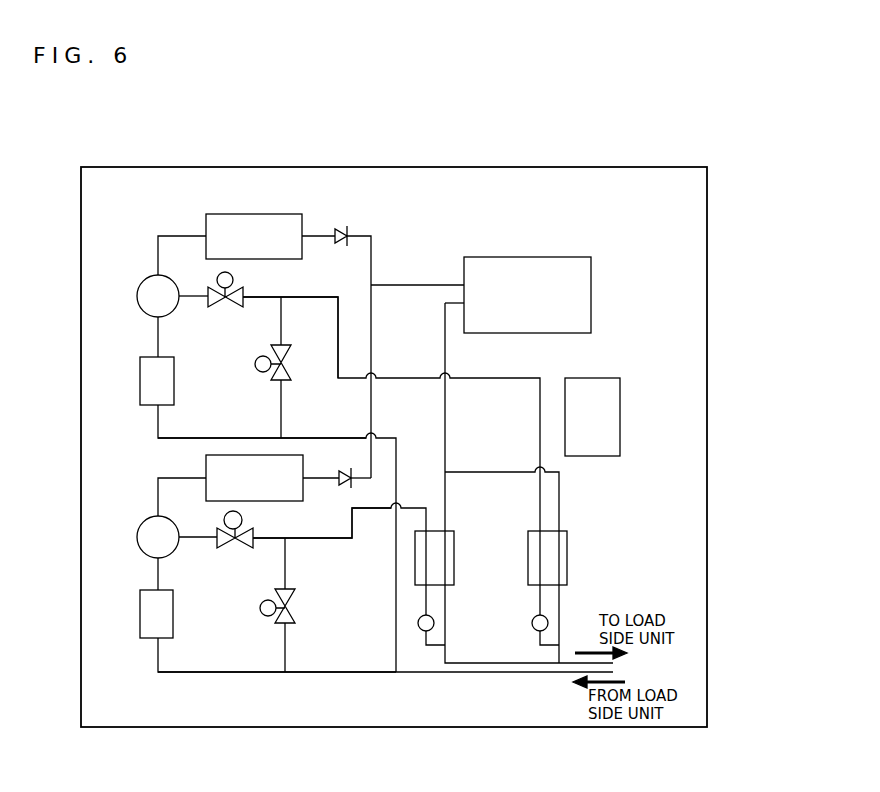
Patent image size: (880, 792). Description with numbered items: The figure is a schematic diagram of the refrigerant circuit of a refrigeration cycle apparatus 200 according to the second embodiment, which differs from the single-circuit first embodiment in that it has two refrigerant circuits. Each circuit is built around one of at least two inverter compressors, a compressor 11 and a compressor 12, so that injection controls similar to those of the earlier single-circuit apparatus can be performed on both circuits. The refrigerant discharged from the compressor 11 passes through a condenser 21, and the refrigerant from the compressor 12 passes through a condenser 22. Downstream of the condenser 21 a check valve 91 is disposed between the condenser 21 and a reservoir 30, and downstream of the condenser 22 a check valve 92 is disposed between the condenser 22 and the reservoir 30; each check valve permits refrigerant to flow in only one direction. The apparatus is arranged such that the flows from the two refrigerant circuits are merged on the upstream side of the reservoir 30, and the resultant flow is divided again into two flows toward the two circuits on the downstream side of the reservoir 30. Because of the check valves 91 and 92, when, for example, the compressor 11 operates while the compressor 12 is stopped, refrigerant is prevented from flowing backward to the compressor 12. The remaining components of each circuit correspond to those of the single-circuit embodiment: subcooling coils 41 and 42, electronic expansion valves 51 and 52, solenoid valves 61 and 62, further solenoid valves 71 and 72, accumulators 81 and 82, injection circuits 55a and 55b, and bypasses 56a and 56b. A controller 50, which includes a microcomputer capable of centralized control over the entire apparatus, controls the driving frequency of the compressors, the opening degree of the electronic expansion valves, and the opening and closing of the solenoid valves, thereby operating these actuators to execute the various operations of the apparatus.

The compressor 11 is at (140, 298).
The compressor 12 is at (140, 539).
The condenser 21 is at (206, 217).
The condenser 22 is at (206, 459).
The reservoir 30 is at (464, 262).
The subcooling coil 41 is at (569, 548).
The subcooling coil 42 is at (456, 548).
The controller 50 is at (620, 405).
The electronic expansion valve 51 is at (532, 625).
The electronic expansion valve 52 is at (434, 624).
The injection circuit 55a is at (307, 300).
The injection circuit 55b is at (335, 543).
The bypass 56a is at (281, 413).
The bypass 56b is at (285, 650).
The solenoid valve 61 is at (245, 292).
The solenoid valve 62 is at (253, 531).
The solenoid valve 71 is at (291, 372).
The solenoid valve 72 is at (296, 612).
The accumulator 81 is at (140, 364).
The accumulator 82 is at (140, 600).
The check valve 91 is at (345, 228).
The check valve 92 is at (340, 485).
The refrigeration cycle apparatus 200 is at (707, 228).